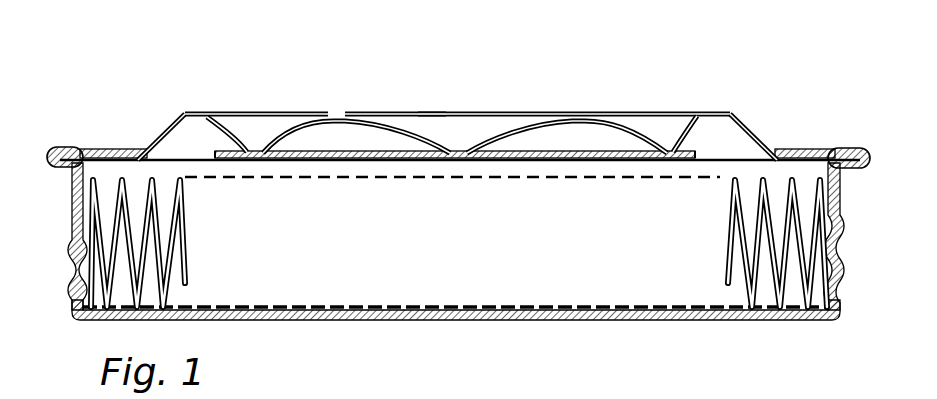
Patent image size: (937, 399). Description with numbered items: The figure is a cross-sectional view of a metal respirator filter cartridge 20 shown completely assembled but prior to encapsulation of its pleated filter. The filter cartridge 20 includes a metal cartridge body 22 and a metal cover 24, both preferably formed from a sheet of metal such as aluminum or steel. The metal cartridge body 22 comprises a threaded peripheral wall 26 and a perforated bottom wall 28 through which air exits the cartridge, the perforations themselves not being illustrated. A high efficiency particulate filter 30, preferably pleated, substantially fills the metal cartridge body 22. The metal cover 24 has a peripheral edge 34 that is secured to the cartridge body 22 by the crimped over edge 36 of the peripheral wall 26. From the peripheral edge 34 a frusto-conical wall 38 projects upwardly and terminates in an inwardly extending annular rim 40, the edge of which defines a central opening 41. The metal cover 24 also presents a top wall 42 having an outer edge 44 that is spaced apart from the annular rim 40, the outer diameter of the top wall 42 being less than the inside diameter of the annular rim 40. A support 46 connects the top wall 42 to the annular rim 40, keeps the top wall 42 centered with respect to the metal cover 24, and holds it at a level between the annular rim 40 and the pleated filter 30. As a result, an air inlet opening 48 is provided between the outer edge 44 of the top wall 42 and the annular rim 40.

The filter cartridge 20 is at (731, 80).
The metal cartridge body 22 is at (396, 324).
The metal cover 24 is at (759, 130).
The threaded peripheral wall 26 is at (72, 190).
The perforated bottom wall 28 is at (528, 320).
The high efficiency particulate filter 30 is at (188, 248).
The peripheral edge 34 is at (92, 148).
The crimped over edge 36 is at (62, 147).
The frusto-conical wall 38 is at (174, 122).
The annular rim 40 is at (203, 112).
The central opening 41 is at (432, 110).
The top wall 42 is at (366, 159).
The outer edge 44 is at (217, 161).
The support 46 is at (500, 128).
The air inlet opening 48 is at (596, 141).